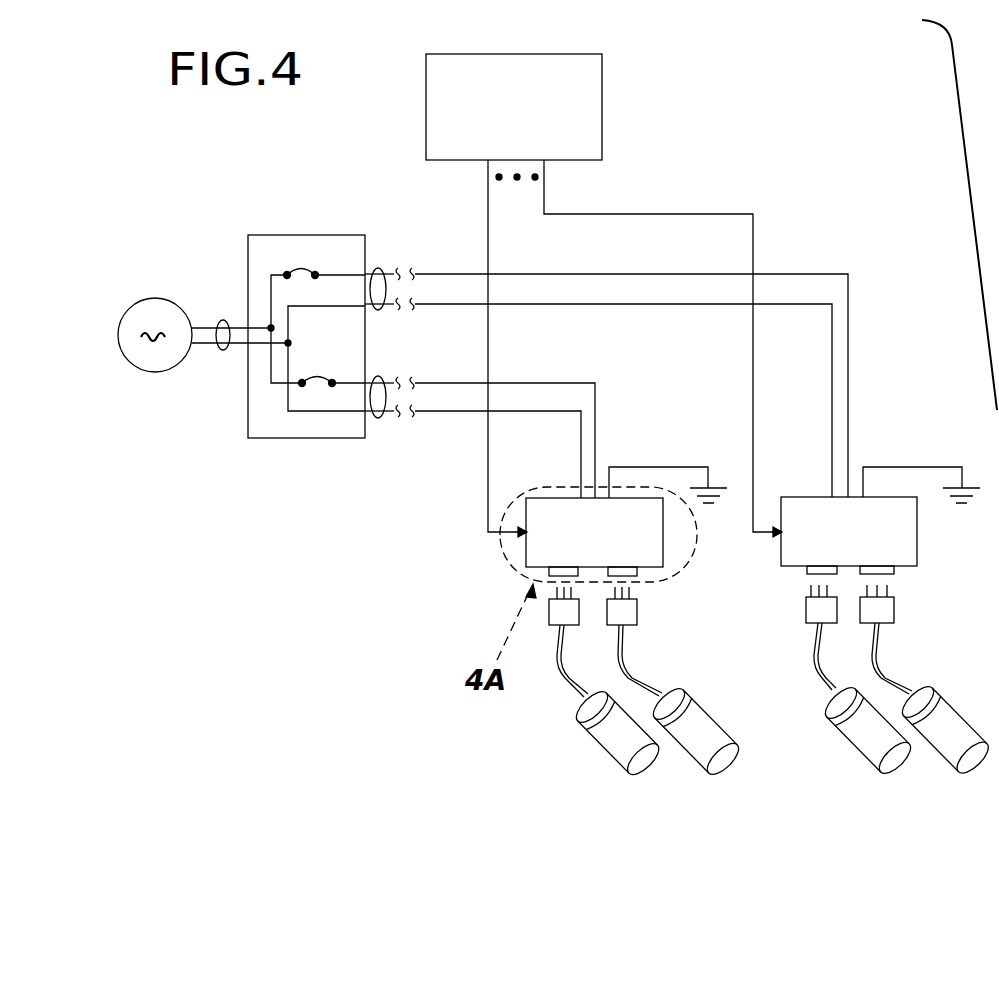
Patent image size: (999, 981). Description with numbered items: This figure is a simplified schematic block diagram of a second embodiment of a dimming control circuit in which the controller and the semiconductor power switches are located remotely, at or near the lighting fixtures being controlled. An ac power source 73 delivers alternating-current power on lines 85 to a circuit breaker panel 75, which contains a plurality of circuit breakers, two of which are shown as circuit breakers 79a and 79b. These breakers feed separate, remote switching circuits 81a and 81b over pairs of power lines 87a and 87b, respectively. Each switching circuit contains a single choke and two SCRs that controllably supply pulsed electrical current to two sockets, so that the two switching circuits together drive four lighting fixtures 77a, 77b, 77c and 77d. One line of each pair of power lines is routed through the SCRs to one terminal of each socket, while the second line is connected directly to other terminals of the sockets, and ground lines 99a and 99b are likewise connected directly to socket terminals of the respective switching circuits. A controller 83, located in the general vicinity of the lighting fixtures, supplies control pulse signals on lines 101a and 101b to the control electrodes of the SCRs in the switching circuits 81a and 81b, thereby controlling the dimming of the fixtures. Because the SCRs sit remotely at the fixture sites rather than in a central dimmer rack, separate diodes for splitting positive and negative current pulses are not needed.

The ac power source 73 is at (154, 299).
The circuit breaker panel 75 is at (265, 235).
The circuit breaker 79a is at (303, 268).
The circuit breaker 79b is at (319, 374).
The controller 83 is at (585, 55).
The lines 85 is at (222, 350).
The pair of lines 87a is at (380, 418).
The pair of lines 87b is at (380, 268).
The switching circuit 81a is at (526, 563).
The switching circuit 81b is at (803, 497).
The ground line 99a is at (685, 467).
The ground line 99b is at (938, 467).
The line 101a is at (487, 494).
The line 101b is at (766, 533).
The lighting fixture 77a is at (605, 740).
The lighting fixture 77b is at (695, 755).
The lighting fixture 77c is at (870, 755).
The lighting fixture 77d is at (955, 755).